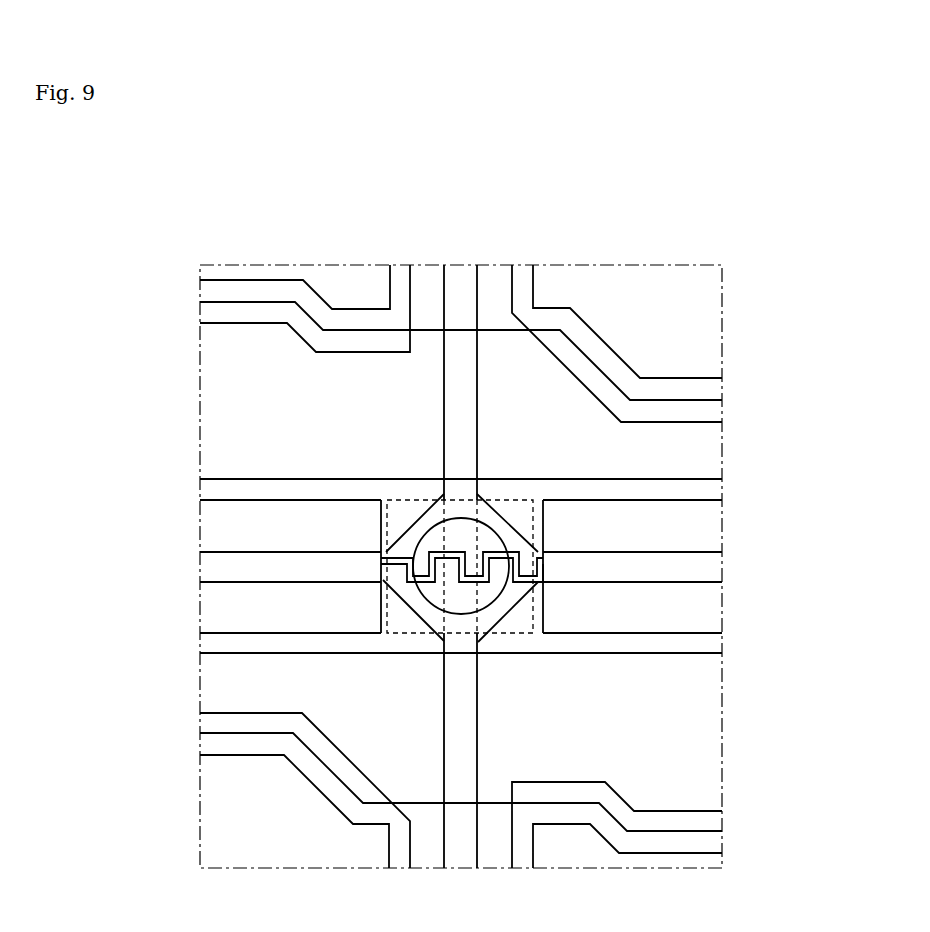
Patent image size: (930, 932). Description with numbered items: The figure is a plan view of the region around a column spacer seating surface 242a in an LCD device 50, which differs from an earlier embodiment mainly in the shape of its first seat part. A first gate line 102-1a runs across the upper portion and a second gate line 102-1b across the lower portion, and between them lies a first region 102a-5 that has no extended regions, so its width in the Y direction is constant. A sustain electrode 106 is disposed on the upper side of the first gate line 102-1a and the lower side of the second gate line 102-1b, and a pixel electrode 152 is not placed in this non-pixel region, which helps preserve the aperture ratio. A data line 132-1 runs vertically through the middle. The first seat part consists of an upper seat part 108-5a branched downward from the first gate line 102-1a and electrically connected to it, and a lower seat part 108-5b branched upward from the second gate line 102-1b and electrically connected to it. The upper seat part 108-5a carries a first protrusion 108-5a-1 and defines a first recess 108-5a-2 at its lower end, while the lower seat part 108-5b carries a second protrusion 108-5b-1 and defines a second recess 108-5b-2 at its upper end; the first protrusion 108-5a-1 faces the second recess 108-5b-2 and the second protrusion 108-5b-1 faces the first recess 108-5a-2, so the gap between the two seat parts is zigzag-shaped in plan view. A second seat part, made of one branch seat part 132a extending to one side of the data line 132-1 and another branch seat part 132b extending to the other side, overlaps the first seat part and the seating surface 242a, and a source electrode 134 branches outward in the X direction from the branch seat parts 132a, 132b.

The LCD device 50 is at (461, 511).
The pixel electrode 152 is at (313, 277).
The sustain electrode 106 is at (203, 292).
The data line 132-1 is at (462, 466).
The first gate line 102-1a is at (213, 488).
The second gate line 102-1b is at (210, 643).
The first region 102a-5 is at (220, 528).
The 1-1st seat part 108-5a is at (385, 523).
The first protrusion 108-5a-1 is at (420, 574).
The first recess 108-5a-2 is at (446, 572).
The 1-2nd seat part 108-5b is at (537, 606).
The second protrusion 108-5b-1 is at (448, 562).
The second recess 108-5b-2 is at (413, 572).
The source electrode 134 is at (217, 565).
The seating surface 242a is at (495, 547).
The 2-1st seat part 132a is at (417, 604).
The 2-2nd seat part 132b is at (507, 610).